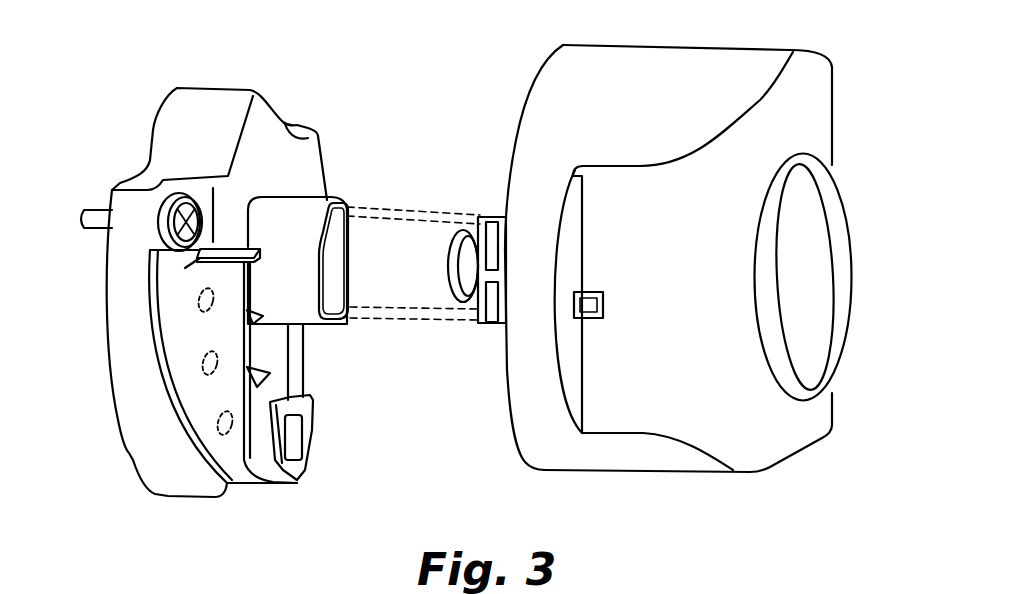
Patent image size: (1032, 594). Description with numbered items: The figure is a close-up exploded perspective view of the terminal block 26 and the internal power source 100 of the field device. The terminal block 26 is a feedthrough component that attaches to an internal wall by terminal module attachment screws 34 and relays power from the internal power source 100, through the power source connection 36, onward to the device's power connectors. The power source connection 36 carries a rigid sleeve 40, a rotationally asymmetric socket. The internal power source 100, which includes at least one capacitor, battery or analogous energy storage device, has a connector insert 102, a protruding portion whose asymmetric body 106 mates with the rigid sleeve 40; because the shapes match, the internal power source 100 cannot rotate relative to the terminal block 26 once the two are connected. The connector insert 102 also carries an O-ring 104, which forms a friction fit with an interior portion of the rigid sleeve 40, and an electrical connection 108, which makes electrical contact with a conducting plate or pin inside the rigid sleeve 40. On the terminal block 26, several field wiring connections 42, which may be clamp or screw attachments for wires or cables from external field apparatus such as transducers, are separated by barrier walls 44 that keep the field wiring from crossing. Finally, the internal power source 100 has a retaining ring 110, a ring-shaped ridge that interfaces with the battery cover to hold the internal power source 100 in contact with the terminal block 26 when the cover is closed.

The terminal block 26 is at (205, 95).
The terminal module attachment screws 34 is at (88, 206).
The power source connection 36 is at (355, 295).
The rigid sleeve 40 is at (303, 202).
The field wiring connections 42 is at (219, 414).
The barrier walls 44 is at (291, 434).
The internal power source 100 is at (662, 460).
The connector insert 102 is at (482, 196).
The O-ring 104 is at (458, 248).
The asymmetric body 106 is at (486, 326).
The electrical connection 108 is at (455, 277).
The retaining ring 110 is at (841, 192).